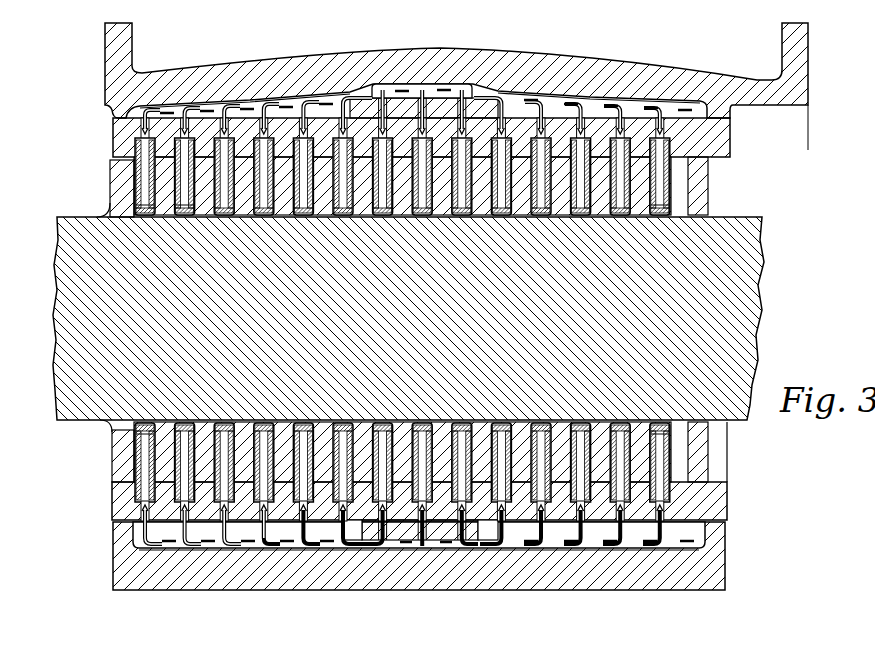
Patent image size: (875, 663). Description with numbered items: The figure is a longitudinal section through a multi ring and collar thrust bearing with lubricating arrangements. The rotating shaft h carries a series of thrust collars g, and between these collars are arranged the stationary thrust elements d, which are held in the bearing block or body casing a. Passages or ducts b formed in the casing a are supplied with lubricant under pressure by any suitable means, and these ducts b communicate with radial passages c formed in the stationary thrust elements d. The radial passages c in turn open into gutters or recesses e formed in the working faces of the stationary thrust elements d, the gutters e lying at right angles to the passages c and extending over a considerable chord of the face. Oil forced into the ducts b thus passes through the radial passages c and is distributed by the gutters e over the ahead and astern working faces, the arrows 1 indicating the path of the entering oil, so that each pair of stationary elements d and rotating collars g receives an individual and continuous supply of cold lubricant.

The arrows indicating path of entering oil 1 is at (282, 92).
The bearing block or body casing a is at (706, 88).
The passages or ducts b is at (448, 87).
The radial passages c is at (152, 202).
The stationary thrust elements d is at (138, 140).
The gutters or recesses e is at (138, 210).
The thrust collars g is at (153, 175).
The rotating shaft h is at (65, 268).